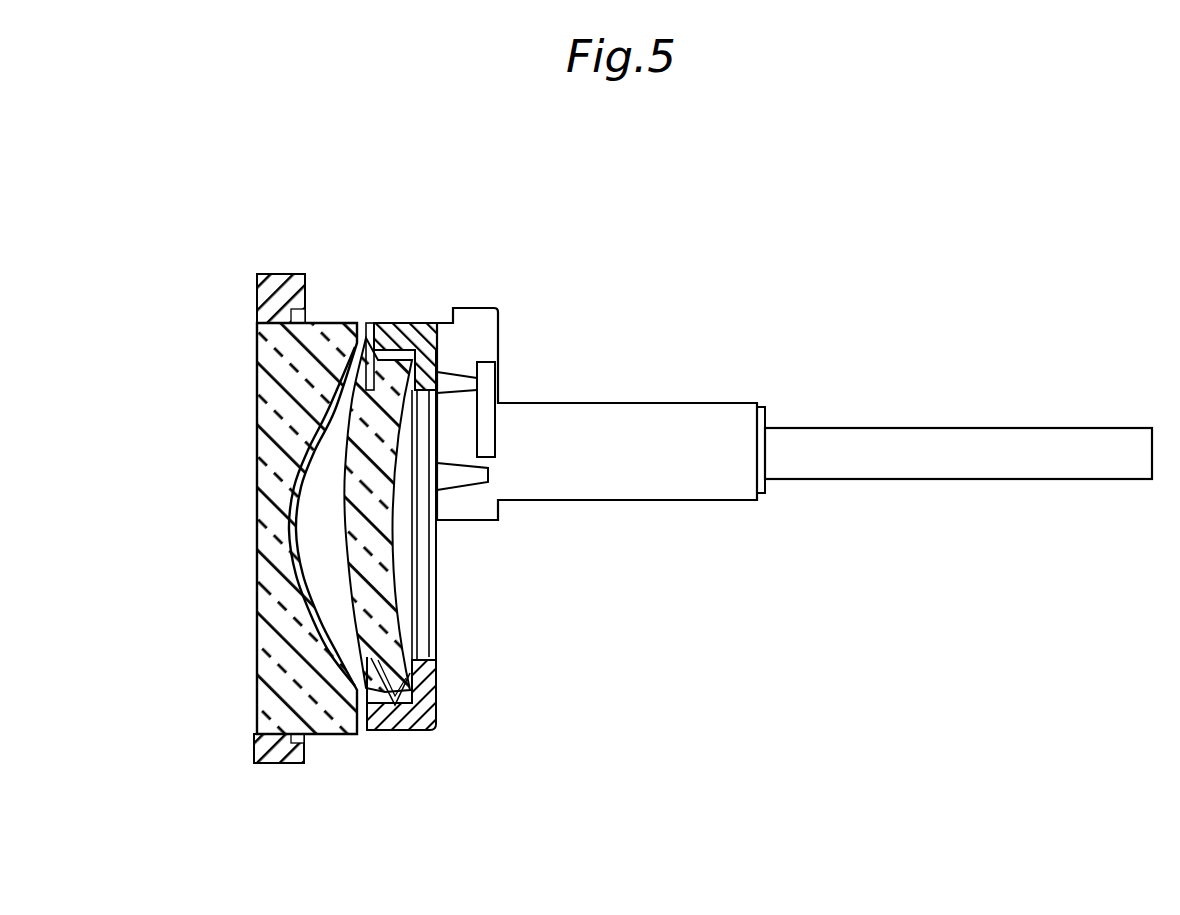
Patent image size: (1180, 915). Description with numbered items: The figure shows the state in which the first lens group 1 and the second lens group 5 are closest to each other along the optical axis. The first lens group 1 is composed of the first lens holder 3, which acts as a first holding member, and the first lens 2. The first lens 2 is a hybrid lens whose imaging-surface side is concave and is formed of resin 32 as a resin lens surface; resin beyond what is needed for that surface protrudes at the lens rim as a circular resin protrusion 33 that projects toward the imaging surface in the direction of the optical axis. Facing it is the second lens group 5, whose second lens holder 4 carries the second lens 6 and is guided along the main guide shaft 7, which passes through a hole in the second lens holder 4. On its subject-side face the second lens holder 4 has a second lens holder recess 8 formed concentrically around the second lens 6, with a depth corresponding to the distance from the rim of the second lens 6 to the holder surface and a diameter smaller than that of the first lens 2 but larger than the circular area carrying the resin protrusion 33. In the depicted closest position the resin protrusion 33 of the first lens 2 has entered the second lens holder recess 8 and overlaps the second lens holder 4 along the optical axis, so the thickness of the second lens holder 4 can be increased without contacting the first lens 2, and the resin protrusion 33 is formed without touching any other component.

The first lens group 1 is at (220, 584).
The first lens 2 is at (282, 405).
The first lens holder 3 is at (258, 297).
The resin 32 is at (290, 505).
The resin protrusion 33 is at (364, 327).
The second lens holder 4 is at (437, 343).
The second lens group 5 is at (472, 503).
The second lens 6 is at (433, 695).
The main guide shaft 7 is at (933, 460).
The second lens holder recess 8 is at (423, 327).